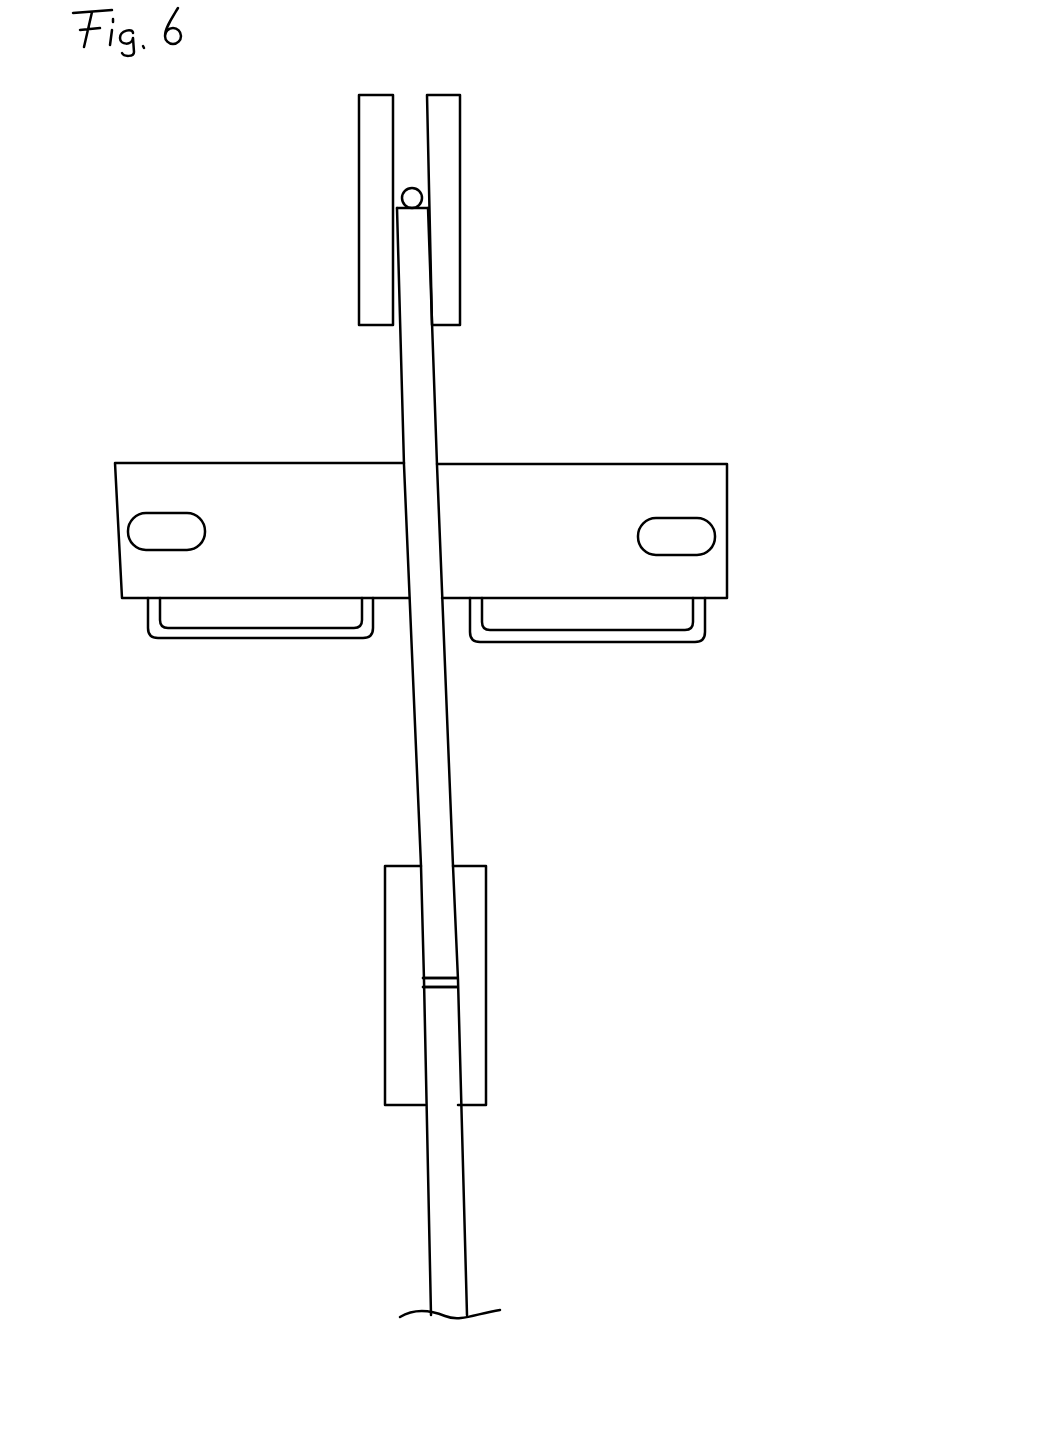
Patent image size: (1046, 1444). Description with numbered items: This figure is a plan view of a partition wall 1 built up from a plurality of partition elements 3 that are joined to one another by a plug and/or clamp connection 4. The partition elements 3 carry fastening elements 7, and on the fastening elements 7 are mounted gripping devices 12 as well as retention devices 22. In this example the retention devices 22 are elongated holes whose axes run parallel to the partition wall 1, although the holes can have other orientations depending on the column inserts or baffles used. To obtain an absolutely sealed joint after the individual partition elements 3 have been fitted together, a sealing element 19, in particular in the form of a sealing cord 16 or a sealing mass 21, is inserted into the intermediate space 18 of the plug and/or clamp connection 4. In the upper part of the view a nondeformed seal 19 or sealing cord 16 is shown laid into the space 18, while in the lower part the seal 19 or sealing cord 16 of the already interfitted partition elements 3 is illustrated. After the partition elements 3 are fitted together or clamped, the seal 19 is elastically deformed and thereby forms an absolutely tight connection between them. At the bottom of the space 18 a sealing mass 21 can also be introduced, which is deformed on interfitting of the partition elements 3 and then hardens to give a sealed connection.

The partition wall 1 is at (770, 271).
The partition element 3 is at (497, 763).
The plug and/or clamp connection 4 is at (228, 265).
The fastening element 7 is at (573, 480).
The gripping device 12 is at (815, 662).
The sealing cord 16 is at (589, 564).
The intermediate space 18 is at (597, 38).
The sealing element 19 is at (589, 564).
The sealing mass 21 is at (437, 987).
The retention device 22 is at (67, 603).